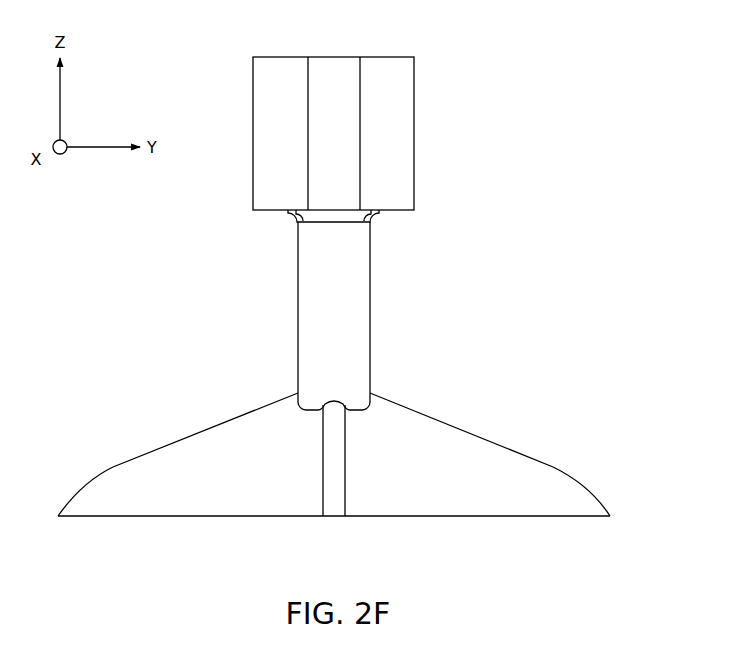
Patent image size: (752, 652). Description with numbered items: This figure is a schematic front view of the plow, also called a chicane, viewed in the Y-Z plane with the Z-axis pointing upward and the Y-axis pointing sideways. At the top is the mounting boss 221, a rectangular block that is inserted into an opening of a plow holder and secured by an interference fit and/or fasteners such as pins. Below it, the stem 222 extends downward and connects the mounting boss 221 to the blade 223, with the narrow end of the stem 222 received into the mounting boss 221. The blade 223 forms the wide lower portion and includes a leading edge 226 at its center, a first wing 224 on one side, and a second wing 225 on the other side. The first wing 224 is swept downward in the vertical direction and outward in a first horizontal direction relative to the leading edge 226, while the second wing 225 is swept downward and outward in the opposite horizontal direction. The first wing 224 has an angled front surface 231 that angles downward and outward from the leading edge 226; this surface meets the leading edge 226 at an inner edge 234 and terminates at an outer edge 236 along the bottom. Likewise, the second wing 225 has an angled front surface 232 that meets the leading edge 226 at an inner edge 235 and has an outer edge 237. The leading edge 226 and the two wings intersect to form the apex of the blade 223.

The mounting boss 221 is at (417, 119).
The stem 222 is at (345, 287).
The blade 223 is at (367, 476).
The first wing 224 is at (219, 421).
The second wing 225 is at (452, 422).
The leading edge 226 is at (329, 486).
The angled front surface 231 is at (155, 482).
The angled front surface 232 is at (513, 485).
The inner edge 234 is at (323, 460).
The inner edge 235 is at (346, 468).
The outer edge 236 is at (210, 517).
The outer edge 237 is at (435, 517).